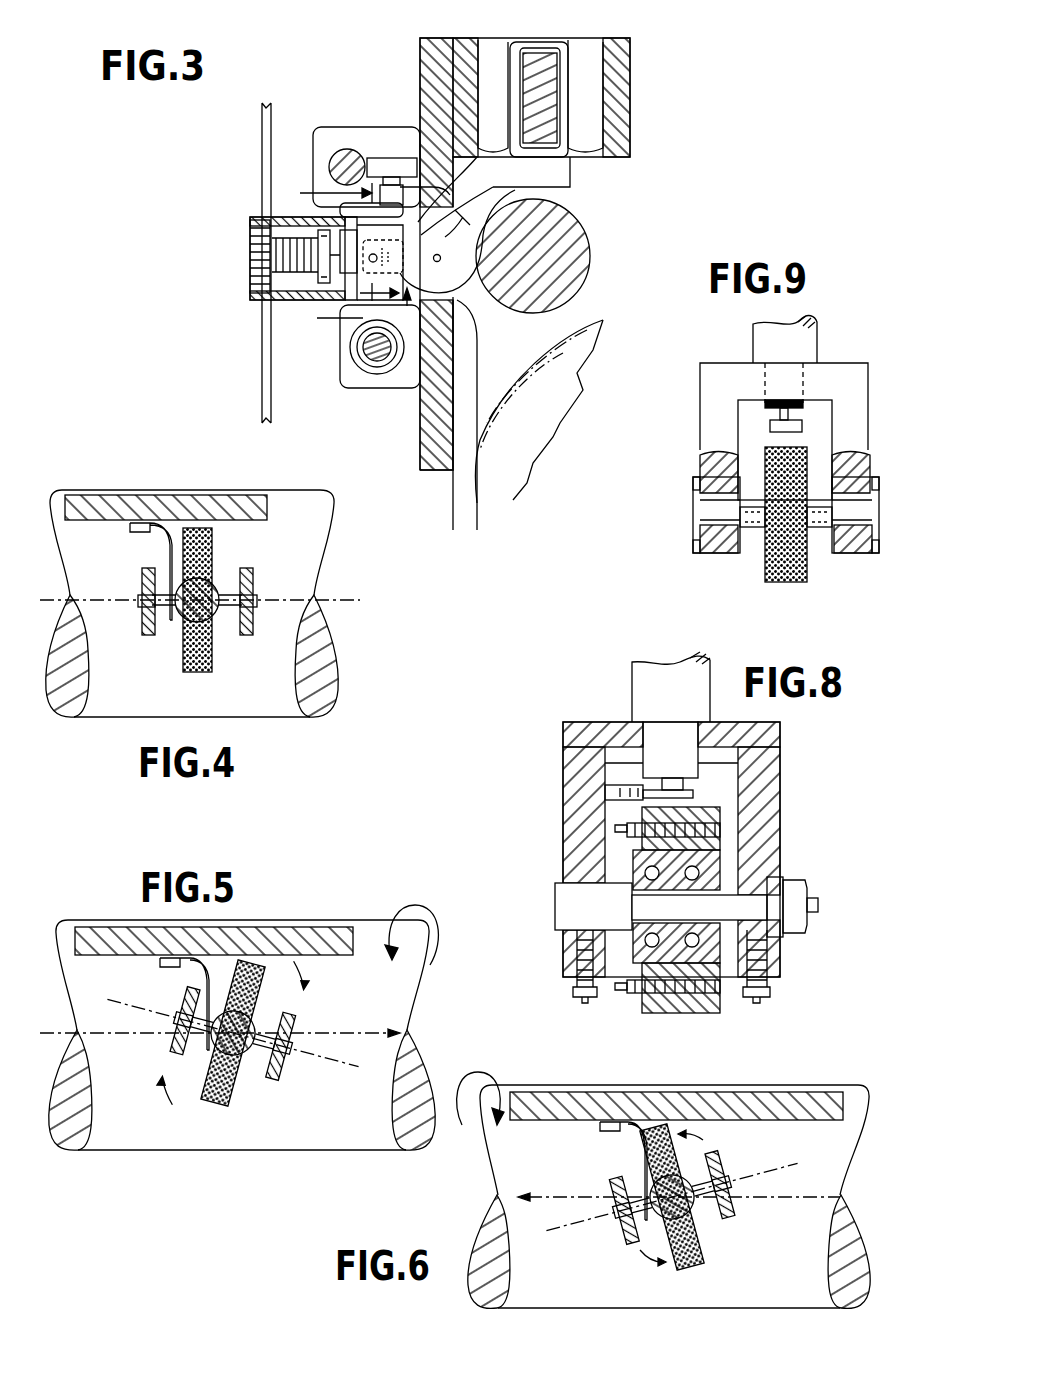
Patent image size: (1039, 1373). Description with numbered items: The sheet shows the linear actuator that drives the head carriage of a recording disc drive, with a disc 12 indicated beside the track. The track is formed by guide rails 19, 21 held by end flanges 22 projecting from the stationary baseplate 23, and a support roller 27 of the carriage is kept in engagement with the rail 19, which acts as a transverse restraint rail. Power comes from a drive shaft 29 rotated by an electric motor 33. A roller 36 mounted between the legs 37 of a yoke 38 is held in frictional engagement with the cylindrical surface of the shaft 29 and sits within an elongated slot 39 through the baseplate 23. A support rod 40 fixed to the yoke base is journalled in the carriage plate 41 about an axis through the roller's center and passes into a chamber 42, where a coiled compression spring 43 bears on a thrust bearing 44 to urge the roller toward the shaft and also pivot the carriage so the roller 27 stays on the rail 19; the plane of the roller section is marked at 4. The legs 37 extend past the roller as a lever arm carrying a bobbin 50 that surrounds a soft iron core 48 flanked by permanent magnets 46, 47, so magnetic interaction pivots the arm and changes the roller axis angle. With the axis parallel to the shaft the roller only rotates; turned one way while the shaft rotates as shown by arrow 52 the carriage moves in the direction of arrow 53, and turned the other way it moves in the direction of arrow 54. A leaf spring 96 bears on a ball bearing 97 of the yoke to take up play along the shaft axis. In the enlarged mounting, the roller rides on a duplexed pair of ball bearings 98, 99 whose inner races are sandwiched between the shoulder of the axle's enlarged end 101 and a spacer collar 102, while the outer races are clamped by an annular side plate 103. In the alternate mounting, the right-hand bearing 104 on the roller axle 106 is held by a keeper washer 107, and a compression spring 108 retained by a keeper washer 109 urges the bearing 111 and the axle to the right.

In FIG. 3, the recording disc 12 is at (262, 160).
In FIG. 3, the end flanges 22 is at (322, 150).
In FIG. 3, the guide rail 19 is at (347, 149).
In FIG. 3, the support roller 27 is at (388, 158).
In FIG. 3, the section plane 4— 4 is at (345, 258).
In FIG. 3, the permanent magnet 47 is at (488, 55).
In FIG. 3, the bobbin 50 is at (545, 60).
In FIG. 3, the permanent magnet 46 is at (588, 55).
In FIG. 3, the magnetic core 48 is at (630, 64).
In FIG. 3, the elongated slot 39 is at (432, 195).
In FIG. 3, the leaf spring 96 is at (468, 214).
In FIG. 4, the leaf spring 96 is at (152, 545).
In FIG. 5, the leaf spring 96 is at (195, 975).
In FIG. 6, the leaf spring 96 is at (635, 1142).
In FIG. 8, the leaf spring 96 is at (612, 785).
In FIG. 3, the drive shaft 29 is at (566, 224).
In FIG. 4, the drive shaft 29 is at (258, 717).
In FIG. 5, the drive shaft 29 is at (198, 1150).
In FIG. 6, the drive shaft 29 is at (628, 1308).
In FIG. 3, the chamber 42 is at (258, 226).
In FIG. 3, the coiled compression spring 43 is at (258, 253).
In FIG. 3, the thrust bearing 44 is at (262, 285).
In FIG. 3, the support rod 40 is at (318, 300).
In FIG. 8, the support rod 40 is at (638, 687).
In FIG. 9, the support rod 40 is at (805, 345).
In FIG. 3, the legs 37 is at (462, 250).
In FIG. 4, the legs 37 is at (142, 578).
In FIG. 5, the legs 37 is at (174, 1052).
In FIG. 6, the legs 37 is at (630, 1243).
In FIG. 8, the legs 37 is at (570, 823).
In FIG. 3, the plate 41 is at (395, 256).
In FIG. 3, the roller 36 is at (463, 313).
In FIG. 4, the roller 36 is at (190, 660).
In FIG. 5, the roller 36 is at (212, 1103).
In FIG. 6, the roller 36 is at (693, 1263).
In FIG. 8, the roller 36 is at (705, 1010).
In FIG. 9, the roller 36 is at (787, 582).
In FIG. 3, the guide rail 21 is at (360, 350).
In FIG. 3, the yoke 38 is at (404, 388).
In FIG. 8, the yoke 38 is at (795, 750).
In FIG. 3, the baseplate 23 is at (432, 447).
In FIG. 3, the electric motor 33 is at (533, 451).
In FIG. 5, the arrow 52 is at (428, 958).
In FIG. 6, the arrow 52 is at (490, 1088).
In FIG. 5, the arrow 53 is at (333, 1033).
In FIG. 6, the arrow 54 is at (540, 1197).
In FIG. 8, the ball bearing 97 is at (695, 795).
In FIG. 8, the ball bearing 98 is at (630, 858).
In FIG. 8, the ball bearing 99 is at (728, 852).
In FIG. 8, the enlarged end 101 is at (565, 908).
In FIG. 8, the spacer collar 102 is at (770, 878).
In FIG. 8, the annular side plate 103 is at (633, 1005).
In FIG. 9, the right-hand bearing 104 is at (862, 528).
In FIG. 9, the roller axle 106 is at (830, 533).
In FIG. 9, the keeper washer 107 is at (862, 477).
In FIG. 9, the compression spring 108 is at (708, 477).
In FIG. 9, the keeper washer 109 is at (695, 528).
In FIG. 9, the bearing 111 is at (740, 533).